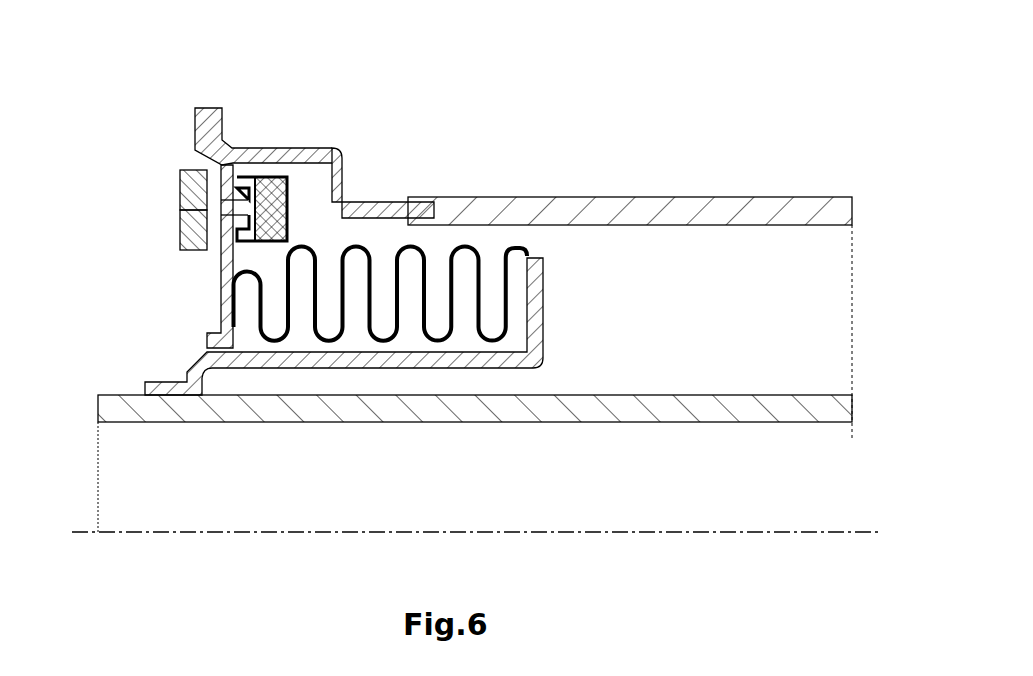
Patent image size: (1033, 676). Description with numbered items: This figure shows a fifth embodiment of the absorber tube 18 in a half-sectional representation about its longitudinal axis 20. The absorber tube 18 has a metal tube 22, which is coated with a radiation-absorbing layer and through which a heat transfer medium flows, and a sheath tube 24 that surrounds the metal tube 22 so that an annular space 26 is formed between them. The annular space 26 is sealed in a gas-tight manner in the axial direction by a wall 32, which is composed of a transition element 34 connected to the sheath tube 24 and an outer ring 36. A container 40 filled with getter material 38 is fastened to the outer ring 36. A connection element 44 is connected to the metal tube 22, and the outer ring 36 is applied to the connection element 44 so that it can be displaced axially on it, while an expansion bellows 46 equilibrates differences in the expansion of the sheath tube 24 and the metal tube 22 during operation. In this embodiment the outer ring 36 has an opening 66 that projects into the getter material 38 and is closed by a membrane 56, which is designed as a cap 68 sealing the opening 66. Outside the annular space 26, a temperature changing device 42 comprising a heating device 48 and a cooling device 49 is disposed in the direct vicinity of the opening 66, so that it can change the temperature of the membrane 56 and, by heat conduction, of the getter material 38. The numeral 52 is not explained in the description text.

The absorber tube 18 is at (702, 130).
The longitudinal axis 20 is at (140, 530).
The metal tube 22 is at (675, 393).
The sheath tube 24 is at (507, 197).
The annular space 26 is at (742, 296).
The wall 32 is at (152, 118).
The transition element 34 is at (300, 148).
The outer ring 36 is at (222, 320).
The getter material 38 is at (340, 150).
The container 40 is at (342, 150).
The temperature changing device 42 is at (132, 209).
The connection element 44 is at (383, 280).
The expansion bellows 46 is at (448, 235).
The heating device 48 is at (182, 185).
The cooling device 49 is at (180, 224).
The bellows 52 is at (298, 285).
The membrane 56 is at (351, 188).
The opening 66 is at (221, 212).
The cap 68 is at (288, 210).